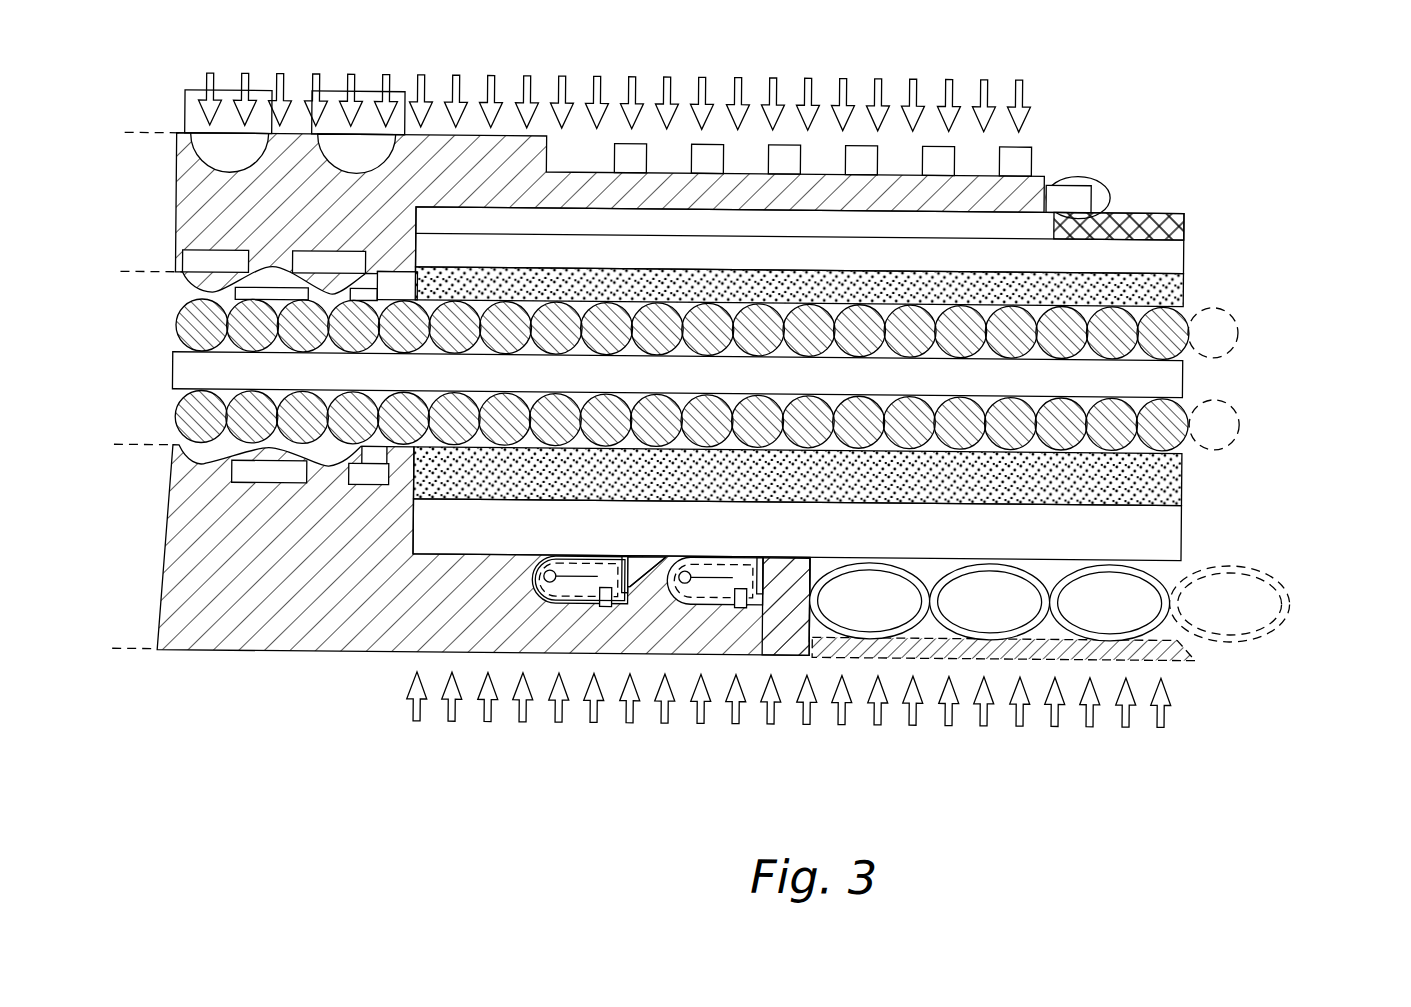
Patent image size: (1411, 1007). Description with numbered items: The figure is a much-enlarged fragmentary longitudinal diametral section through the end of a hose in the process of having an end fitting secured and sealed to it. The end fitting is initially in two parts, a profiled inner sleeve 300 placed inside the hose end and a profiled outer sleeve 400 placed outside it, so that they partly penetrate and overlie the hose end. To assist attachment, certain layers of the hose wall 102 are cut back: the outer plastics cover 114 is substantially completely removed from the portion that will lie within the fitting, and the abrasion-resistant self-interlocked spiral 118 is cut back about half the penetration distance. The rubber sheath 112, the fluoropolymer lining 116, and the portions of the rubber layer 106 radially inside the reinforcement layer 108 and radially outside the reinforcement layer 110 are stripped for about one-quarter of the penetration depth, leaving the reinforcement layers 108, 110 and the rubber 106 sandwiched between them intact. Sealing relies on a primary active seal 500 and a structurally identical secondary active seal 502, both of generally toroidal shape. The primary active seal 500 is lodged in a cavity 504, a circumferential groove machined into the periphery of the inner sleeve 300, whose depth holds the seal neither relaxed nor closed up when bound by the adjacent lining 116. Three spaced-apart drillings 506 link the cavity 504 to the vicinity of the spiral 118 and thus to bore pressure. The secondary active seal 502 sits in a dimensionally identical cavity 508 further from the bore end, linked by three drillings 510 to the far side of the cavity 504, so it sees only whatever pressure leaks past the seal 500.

The hose wall 102 is at (783, 431).
The rubber layer 106 is at (1183, 264).
The reinforcement layer 108 is at (1183, 388).
The reinforcement layer 110 is at (1183, 298).
The rubber sheath 112 is at (1183, 232).
The outer plastics cover 114 is at (1183, 204).
The fluoropolymer lining 116 is at (1183, 498).
The abrasion-resistant self-interlocked spiral 118 is at (1057, 609).
The inner sleeve 300 is at (241, 625).
The outer sleeve 400 is at (189, 188).
The primary active seal 500 is at (719, 586).
The secondary active seal 502 is at (560, 587).
The cavity 504 is at (672, 586).
The drillings 506 is at (785, 580).
The cavity 508 is at (537, 562).
The drillings 510 is at (637, 579).